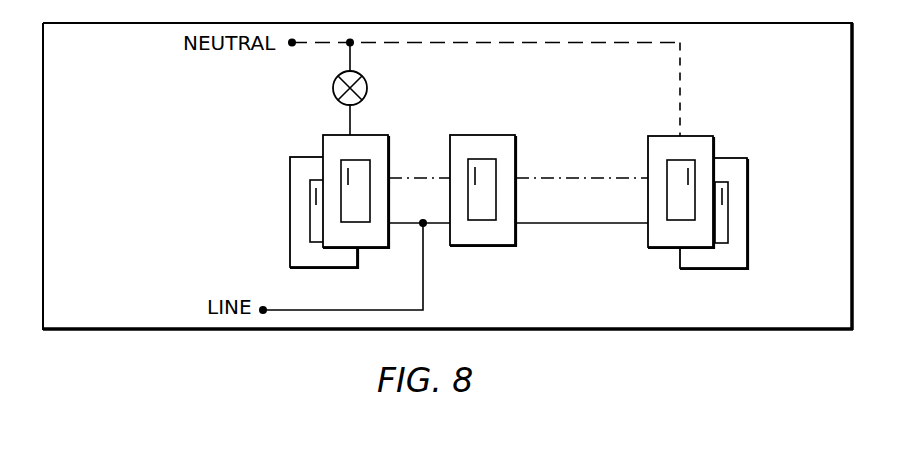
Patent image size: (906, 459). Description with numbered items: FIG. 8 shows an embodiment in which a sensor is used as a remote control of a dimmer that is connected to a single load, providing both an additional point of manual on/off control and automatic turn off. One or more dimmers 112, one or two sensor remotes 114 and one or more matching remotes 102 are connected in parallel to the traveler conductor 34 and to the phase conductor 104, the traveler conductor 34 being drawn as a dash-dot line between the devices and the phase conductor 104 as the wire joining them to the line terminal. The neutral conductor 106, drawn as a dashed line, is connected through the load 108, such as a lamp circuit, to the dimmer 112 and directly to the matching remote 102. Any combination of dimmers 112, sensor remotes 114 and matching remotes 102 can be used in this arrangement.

The traveler conductor 34 is at (437, 178).
The matching remote 102 is at (723, 158).
The phase conductor 104 is at (537, 223).
The neutral conductor 106 is at (408, 43).
The load 108 is at (333, 91).
The dimmer 112 is at (323, 147).
The sensor remote 114 is at (465, 135).